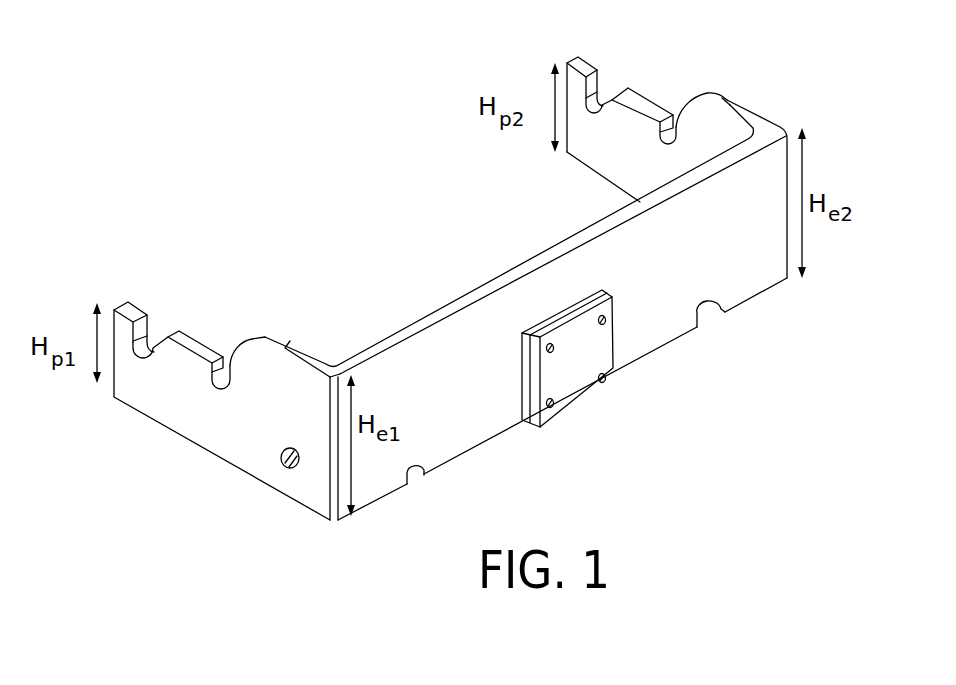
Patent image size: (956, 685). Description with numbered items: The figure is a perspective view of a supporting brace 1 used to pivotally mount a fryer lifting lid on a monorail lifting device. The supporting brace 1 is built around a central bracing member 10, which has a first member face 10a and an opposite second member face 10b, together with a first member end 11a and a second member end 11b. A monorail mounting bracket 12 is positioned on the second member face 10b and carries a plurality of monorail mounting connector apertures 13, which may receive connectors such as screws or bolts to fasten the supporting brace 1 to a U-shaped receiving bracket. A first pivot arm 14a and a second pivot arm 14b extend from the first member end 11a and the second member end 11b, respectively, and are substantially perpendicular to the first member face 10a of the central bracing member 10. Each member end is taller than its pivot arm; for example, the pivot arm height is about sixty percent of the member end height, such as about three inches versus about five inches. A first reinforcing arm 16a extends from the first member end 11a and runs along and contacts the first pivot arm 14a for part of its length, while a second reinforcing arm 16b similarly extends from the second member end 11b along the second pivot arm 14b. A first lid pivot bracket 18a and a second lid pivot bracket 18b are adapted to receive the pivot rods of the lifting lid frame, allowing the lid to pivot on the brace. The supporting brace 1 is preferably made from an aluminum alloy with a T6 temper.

The supporting brace 1 is at (364, 284).
The central bracing member 10 is at (467, 427).
The first member face 10a is at (477, 287).
The second member face 10b is at (705, 268).
The first member end 11a is at (325, 532).
The second member end 11b is at (786, 290).
The monorail mounting bracket 12 is at (580, 407).
The monorail mounting connector apertures 13 is at (604, 383).
The first pivot arm 14a is at (167, 427).
The second pivot arm 14b is at (648, 100).
The first reinforcing arm 16a is at (308, 348).
The second reinforcing arm 16b is at (753, 108).
The first lid pivot bracket 18a is at (173, 330).
The second lid pivot bracket 18b is at (612, 98).